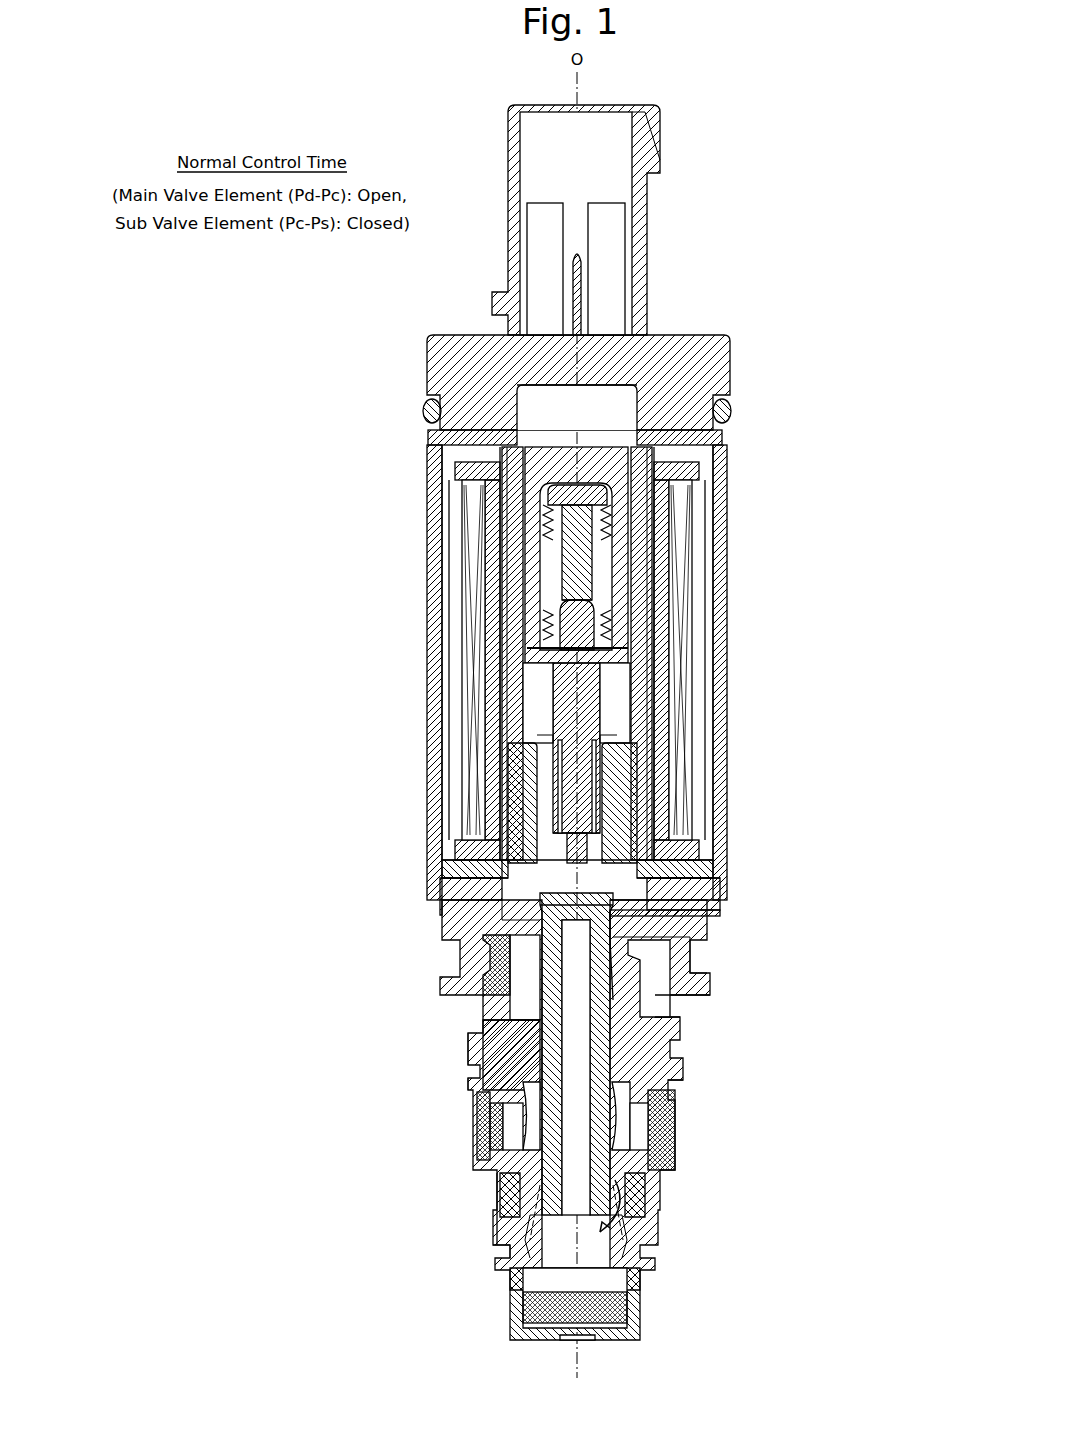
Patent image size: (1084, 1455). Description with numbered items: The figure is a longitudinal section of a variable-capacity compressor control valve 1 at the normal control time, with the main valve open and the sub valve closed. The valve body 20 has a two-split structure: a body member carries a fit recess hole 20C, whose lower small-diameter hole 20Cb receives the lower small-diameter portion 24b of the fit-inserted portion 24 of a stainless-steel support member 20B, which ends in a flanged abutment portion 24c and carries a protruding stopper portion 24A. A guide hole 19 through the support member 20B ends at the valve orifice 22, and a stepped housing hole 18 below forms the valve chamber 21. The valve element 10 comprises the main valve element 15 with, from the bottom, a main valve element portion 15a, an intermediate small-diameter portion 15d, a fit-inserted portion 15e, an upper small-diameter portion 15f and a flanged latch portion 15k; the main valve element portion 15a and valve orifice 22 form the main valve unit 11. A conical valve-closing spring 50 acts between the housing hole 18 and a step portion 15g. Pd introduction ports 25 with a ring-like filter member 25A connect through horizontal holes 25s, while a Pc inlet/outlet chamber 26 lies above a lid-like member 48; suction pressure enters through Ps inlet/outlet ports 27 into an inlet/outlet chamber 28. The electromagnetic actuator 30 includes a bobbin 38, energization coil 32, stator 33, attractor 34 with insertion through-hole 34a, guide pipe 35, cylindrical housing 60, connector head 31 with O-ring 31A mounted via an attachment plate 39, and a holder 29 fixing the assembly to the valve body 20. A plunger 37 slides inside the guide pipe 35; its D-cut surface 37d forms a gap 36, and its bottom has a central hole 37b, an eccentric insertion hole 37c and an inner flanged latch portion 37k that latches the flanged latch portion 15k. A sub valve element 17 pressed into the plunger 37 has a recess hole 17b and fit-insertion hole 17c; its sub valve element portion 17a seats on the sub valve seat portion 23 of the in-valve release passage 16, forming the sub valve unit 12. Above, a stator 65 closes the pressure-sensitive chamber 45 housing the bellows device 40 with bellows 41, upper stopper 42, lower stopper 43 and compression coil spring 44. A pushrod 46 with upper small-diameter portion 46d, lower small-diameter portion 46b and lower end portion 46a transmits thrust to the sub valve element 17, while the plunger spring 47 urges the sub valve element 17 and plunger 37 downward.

The control valve 1 is at (800, 215).
The valve element 10 is at (688, 956).
The main valve unit 11 is at (410, 1186).
The sub valve unit 12 is at (812, 866).
The main valve element 15 is at (470, 1006).
The main valve element portion 15a is at (510, 1211).
The intermediate small-diameter portion 15d is at (495, 1149).
The fit-inserted portion 15e is at (480, 1086).
The upper small-diameter portion 15f is at (505, 966).
The step portion 15g is at (522, 1246).
The flanged latch portion 15k is at (480, 916).
The in-valve release passage 16 is at (500, 1061).
The sub valve element 17 is at (705, 865).
The sub valve element portion 17a is at (720, 896).
The recess hole 17b is at (712, 827).
The fit-insertion hole 17c is at (500, 831).
The housing hole 18 is at (645, 1211).
The guide hole 19 is at (478, 1046).
The valve body 20 is at (690, 1046).
The support member 20B is at (510, 1026).
The fit recess hole 20C is at (700, 1031).
The lower small-diameter hole 20Cb is at (685, 1076).
The valve chamber 21 is at (640, 1191).
The valve orifice 22 is at (500, 1189).
The sub valve seat portion 23 is at (720, 881).
The fit-inserted portion 24 is at (485, 1106).
The stopper portion 24A is at (490, 981).
The lower small-diameter portion 24b is at (500, 1129).
The flanged abutment portion 24c is at (500, 1166).
The Pd introduction ports 25 is at (680, 1156).
The filter member 25A is at (690, 1111).
The horizontal holes 25s is at (680, 1096).
The Pc inlet/outlet chamber 26 is at (635, 1311).
The Ps inlet/outlet ports 27 is at (705, 991).
The inlet/outlet chamber 28 is at (705, 983).
The holder 29 is at (470, 894).
The electromagnetic actuator 30 is at (740, 458).
The connector head 31 is at (440, 373).
The O-ring 31A is at (425, 409).
The energization coil 32 is at (463, 531).
The stator 33 is at (490, 561).
The attractor 34 is at (522, 689).
The insertion through-hole 34a is at (505, 661).
The guide pipe 35 is at (700, 806).
The gap 36 is at (705, 846).
The plunger 37 is at (500, 791).
The central hole 37b is at (712, 946).
The insertion hole 37c is at (545, 941).
The D-cut surface 37d is at (725, 753).
The inner flanged latch portion 37k is at (700, 926).
The bobbin 38 is at (436, 477).
The attachment plate 39 is at (436, 441).
The bellows device 40 is at (640, 521).
The bellows 41 is at (615, 601).
The upper stopper 42 is at (612, 546).
The lower stopper 43 is at (605, 629).
The compression coil spring 44 is at (510, 589).
The pressure-sensitive chamber 45 is at (600, 581).
The pushrod 46 is at (592, 666).
The lower end portion 46a is at (560, 846).
The lower small-diameter portion 46b is at (700, 783).
The upper small-diameter portion 46d is at (560, 641).
The plunger spring 47 is at (522, 726).
The lid-like member 48 is at (645, 1329).
The valve-closing spring 50 is at (650, 1231).
The housing 60 is at (450, 509).
The stator 65 is at (548, 450).